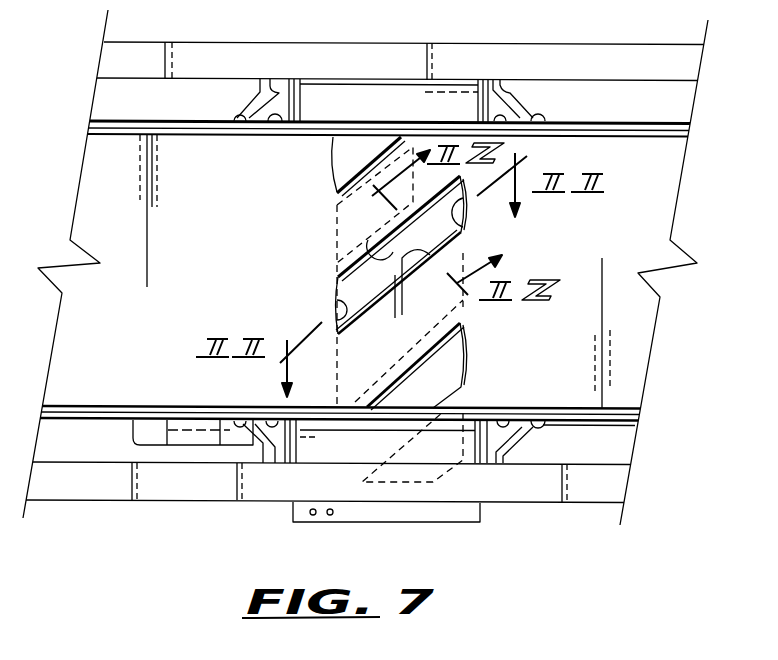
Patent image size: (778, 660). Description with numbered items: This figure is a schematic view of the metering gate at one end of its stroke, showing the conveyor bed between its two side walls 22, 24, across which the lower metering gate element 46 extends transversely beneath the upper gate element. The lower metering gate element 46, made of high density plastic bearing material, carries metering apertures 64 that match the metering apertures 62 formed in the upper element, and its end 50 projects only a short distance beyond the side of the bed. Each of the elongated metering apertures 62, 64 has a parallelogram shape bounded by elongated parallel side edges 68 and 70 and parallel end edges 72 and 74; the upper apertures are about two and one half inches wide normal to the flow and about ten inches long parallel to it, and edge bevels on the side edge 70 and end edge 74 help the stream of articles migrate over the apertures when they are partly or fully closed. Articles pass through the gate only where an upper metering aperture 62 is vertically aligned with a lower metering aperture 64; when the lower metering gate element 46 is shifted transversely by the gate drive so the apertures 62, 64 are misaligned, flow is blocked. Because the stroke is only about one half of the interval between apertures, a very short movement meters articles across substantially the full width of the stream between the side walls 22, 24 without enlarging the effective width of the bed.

The side wall 22 is at (193, 136).
The side wall 24 is at (110, 405).
The lower metering gate element 46 is at (470, 512).
The end of lower metering gate element 50 is at (384, 508).
The metering aperture 62 is at (353, 155).
The metering aperture 64 is at (337, 205).
The side edge 68 is at (390, 254).
The side edge 70 is at (401, 264).
The end edge 72 is at (333, 303).
The end edge 74 is at (448, 205).